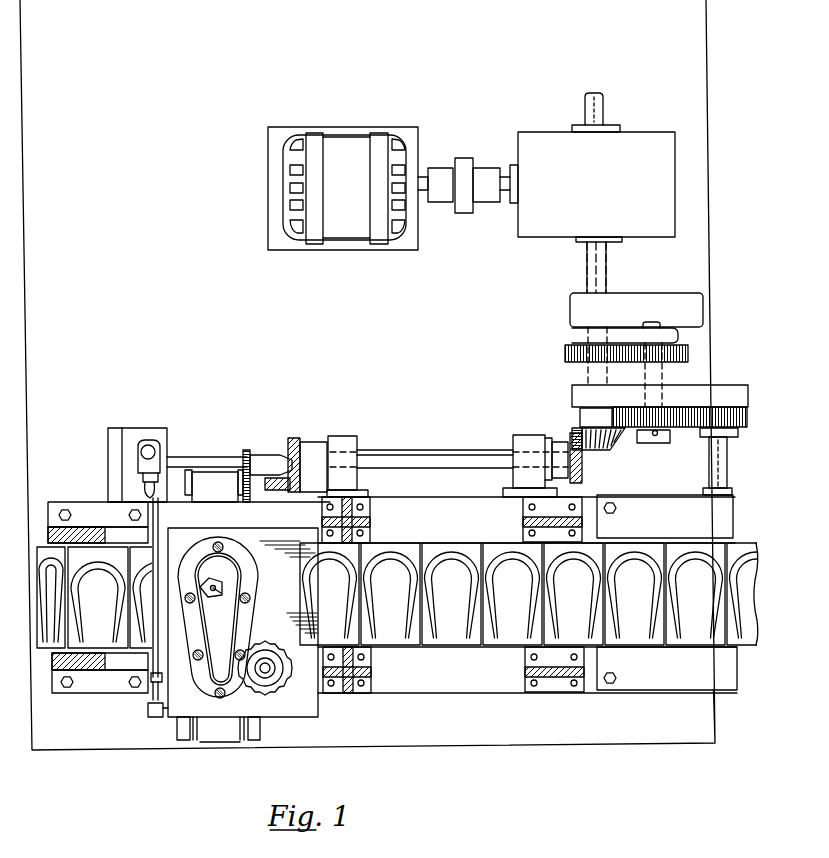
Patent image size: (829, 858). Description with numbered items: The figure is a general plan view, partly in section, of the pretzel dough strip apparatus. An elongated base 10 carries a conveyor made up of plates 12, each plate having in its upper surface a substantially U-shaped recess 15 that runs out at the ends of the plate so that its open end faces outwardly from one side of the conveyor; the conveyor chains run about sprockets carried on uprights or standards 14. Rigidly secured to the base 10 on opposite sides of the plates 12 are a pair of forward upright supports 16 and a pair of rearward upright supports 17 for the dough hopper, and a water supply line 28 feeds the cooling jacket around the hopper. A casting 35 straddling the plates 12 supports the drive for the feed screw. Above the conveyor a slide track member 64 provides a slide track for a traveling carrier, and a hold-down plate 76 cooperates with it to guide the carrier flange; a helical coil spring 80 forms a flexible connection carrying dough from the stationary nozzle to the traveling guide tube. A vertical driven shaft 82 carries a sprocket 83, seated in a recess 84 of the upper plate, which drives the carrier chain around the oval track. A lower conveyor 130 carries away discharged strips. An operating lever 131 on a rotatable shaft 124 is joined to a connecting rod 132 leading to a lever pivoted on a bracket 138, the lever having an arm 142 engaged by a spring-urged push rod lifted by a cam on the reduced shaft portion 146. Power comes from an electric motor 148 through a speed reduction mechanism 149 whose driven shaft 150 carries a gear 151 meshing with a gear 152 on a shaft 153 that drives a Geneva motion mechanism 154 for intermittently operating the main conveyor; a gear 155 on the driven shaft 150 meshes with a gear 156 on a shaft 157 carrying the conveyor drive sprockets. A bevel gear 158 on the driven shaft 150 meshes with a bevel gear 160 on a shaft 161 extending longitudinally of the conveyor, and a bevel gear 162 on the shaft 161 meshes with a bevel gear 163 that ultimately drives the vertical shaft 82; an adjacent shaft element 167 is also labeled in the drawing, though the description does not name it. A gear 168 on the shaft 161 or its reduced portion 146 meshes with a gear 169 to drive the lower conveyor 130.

The base 10 is at (467, 692).
The plates 12 is at (435, 552).
The uprights or standards 14 is at (85, 502).
The U-shaped recess 15 is at (115, 587).
The forward upright supports 16 is at (52, 530).
The rearward upright supports 17 is at (370, 523).
The water supply line 28 is at (210, 587).
The casting 35 is at (523, 520).
The slide track member 64 is at (303, 597).
The hold-down plate 76 is at (252, 582).
The helical coil spring 80 is at (220, 593).
The vertical driven shaft 82 is at (270, 673).
The sprocket 83 is at (267, 643).
The recess 84 is at (260, 693).
The rotatable shaft 124 is at (158, 717).
The conveyor 130 is at (222, 740).
The operating lever 131 is at (152, 682).
The connecting rod 132 is at (160, 512).
The bracket 138 is at (132, 435).
The arm 142 is at (158, 445).
The reduced shaft portion 146 is at (205, 457).
The electric motor 148 is at (345, 142).
The speed reduction mechanism 149 is at (643, 138).
The driven shaft 150 is at (587, 263).
The gear 151 is at (565, 353).
The gear 152 is at (688, 347).
The shaft 153 is at (662, 377).
The Geneva motion mechanism 154 is at (572, 393).
The gear 155 is at (632, 443).
The gear 156 is at (712, 440).
The shaft 157 is at (708, 465).
The bevel gear 158 is at (605, 445).
The bevel gear 160 is at (583, 480).
The shaft 161 is at (430, 455).
The bevel gear 162 is at (293, 440).
The bevel gear 163 is at (272, 478).
The shaft 167 is at (257, 458).
The gear 168 is at (247, 450).
The gear 169 is at (243, 483).